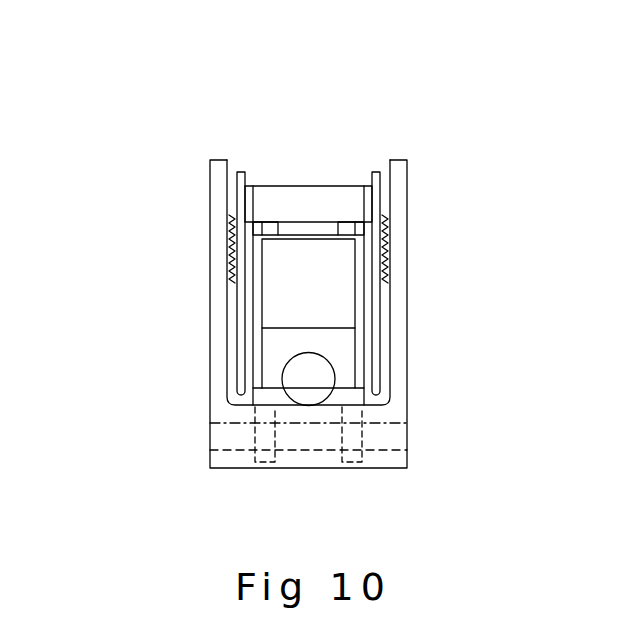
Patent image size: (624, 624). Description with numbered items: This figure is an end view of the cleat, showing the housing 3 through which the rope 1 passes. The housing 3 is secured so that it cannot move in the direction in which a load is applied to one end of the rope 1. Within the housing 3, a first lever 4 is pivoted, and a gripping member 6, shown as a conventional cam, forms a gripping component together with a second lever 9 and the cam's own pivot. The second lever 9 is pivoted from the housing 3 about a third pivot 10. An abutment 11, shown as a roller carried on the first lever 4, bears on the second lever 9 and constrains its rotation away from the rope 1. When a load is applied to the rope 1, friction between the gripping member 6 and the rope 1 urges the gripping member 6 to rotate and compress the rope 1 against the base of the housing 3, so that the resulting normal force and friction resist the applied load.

The rope 1 is at (310, 377).
The housing 3 is at (220, 410).
The first lever 4 is at (278, 222).
The gripping member 6 is at (317, 297).
The second lever 9 is at (250, 171).
The third pivot 10 is at (270, 202).
The abutment 11 is at (367, 250).